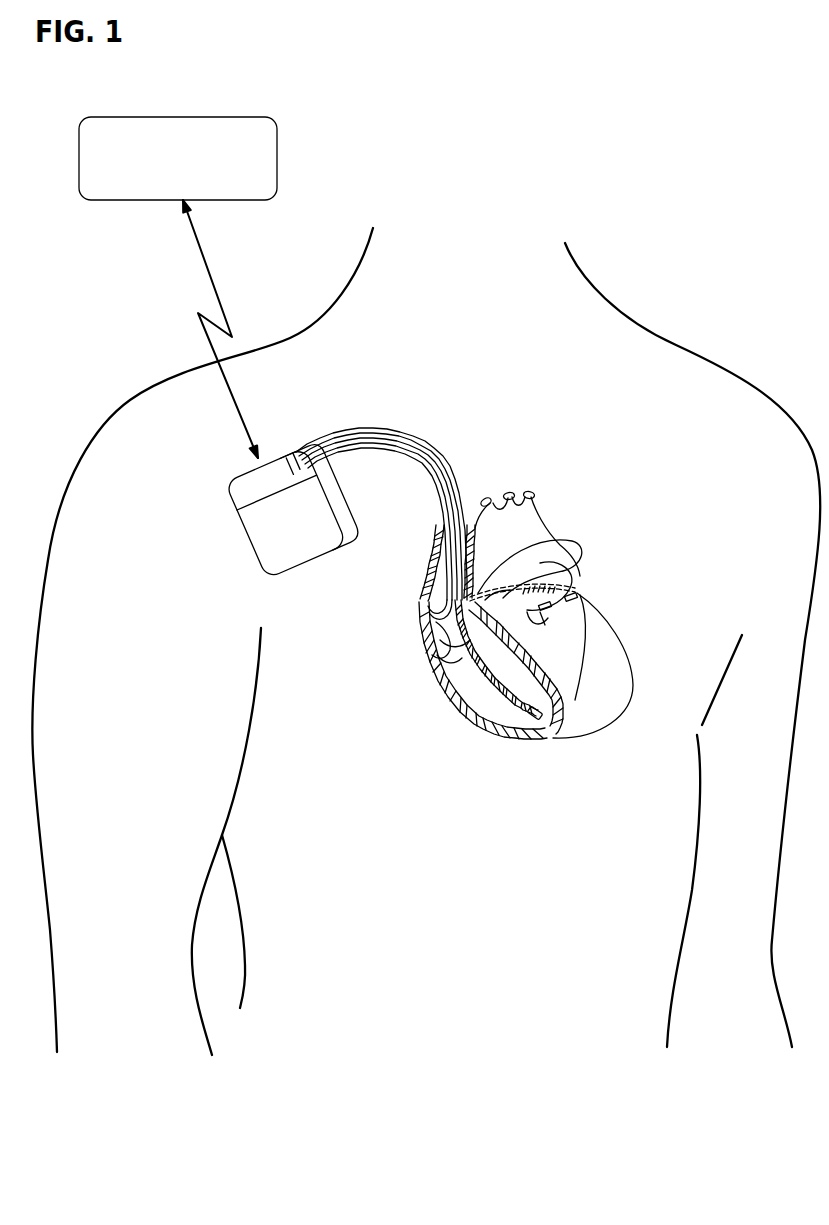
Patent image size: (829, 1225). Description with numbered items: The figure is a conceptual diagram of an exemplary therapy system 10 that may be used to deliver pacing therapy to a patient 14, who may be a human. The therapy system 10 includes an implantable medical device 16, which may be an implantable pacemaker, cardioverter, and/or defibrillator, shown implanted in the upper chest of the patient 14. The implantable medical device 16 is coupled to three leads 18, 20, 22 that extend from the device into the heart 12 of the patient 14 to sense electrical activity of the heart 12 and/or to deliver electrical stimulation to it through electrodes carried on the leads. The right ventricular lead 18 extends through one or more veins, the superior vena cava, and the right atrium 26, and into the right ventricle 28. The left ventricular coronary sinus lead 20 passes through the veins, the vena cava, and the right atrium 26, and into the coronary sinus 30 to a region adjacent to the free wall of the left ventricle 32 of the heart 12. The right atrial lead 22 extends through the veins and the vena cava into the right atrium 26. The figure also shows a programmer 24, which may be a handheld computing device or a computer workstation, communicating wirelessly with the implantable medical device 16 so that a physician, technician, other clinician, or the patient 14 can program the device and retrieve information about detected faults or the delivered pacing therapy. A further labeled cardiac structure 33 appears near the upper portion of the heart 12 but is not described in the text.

The therapy system 10 is at (638, 125).
The heart 12 is at (580, 753).
The patient 14 is at (676, 345).
The implantable medical device 16 is at (243, 541).
The right ventricular lead 18 is at (420, 452).
The left ventricular coronary sinus lead 20 is at (460, 463).
The right atrial lead 22 is at (440, 489).
The programmer 24 is at (167, 181).
The right atrium 26 is at (430, 630).
The right ventricle 28 is at (477, 692).
The coronary sinus 30 is at (490, 600).
The left ventricle 32 is at (598, 645).
The left atrium 33 is at (530, 540).